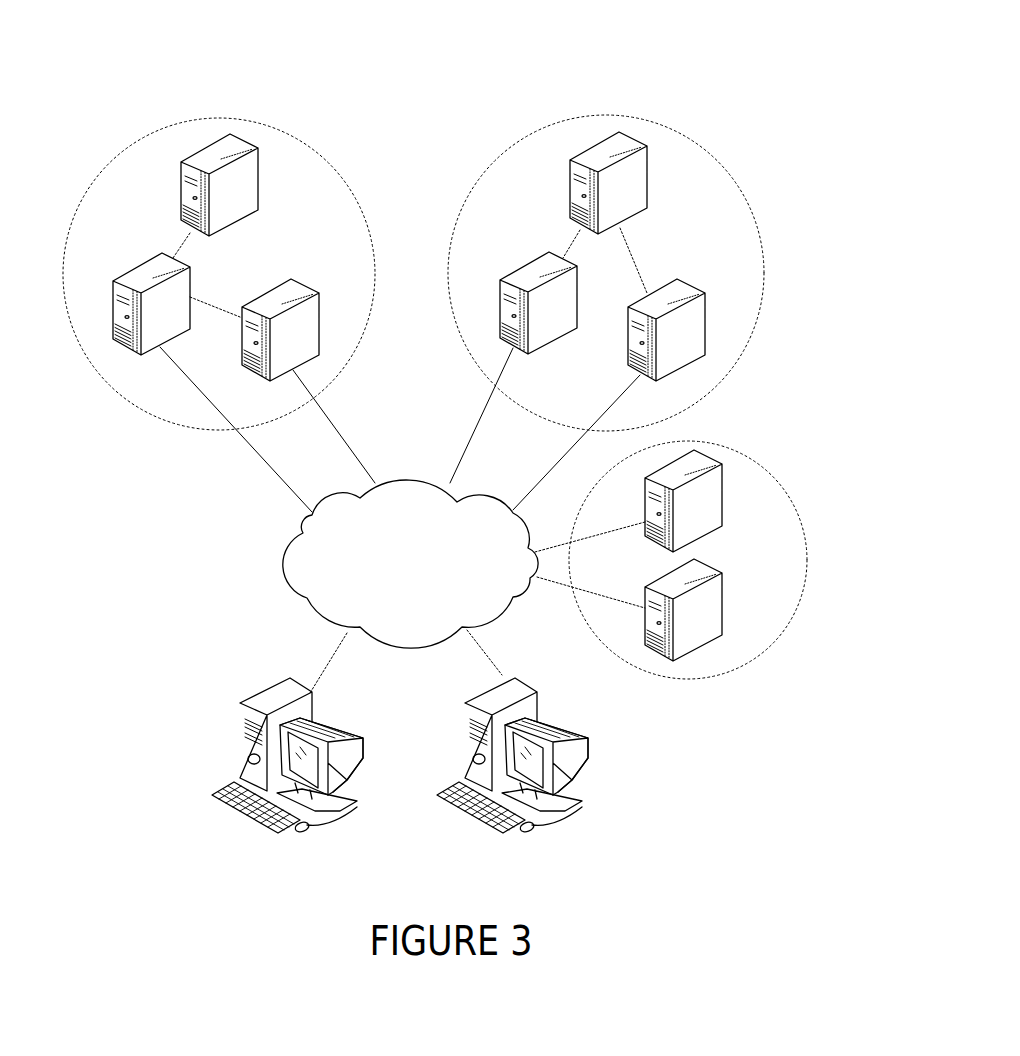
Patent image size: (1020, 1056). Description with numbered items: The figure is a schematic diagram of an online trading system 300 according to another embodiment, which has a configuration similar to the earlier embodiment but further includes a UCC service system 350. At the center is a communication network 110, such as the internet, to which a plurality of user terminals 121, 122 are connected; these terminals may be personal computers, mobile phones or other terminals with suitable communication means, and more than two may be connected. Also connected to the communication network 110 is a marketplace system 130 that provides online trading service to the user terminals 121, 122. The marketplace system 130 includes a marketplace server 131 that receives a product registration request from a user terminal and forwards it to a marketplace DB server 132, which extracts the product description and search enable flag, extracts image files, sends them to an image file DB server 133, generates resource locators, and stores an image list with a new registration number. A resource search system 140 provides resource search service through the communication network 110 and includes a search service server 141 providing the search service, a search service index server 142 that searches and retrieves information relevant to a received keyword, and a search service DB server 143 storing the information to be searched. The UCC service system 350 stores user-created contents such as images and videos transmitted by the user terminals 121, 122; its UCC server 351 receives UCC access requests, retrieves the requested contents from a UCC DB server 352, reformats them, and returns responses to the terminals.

The online trading system 300 is at (466, 36).
The communication network 110 is at (410, 477).
The user terminal 121 is at (265, 690).
The user terminal 122 is at (517, 680).
The marketplace system 130 is at (208, 117).
The marketplace server 131 is at (278, 286).
The marketplace database server 132 is at (142, 264).
The image file database server 133 is at (256, 193).
The resource search system 140 is at (597, 114).
The search service server 141 is at (680, 281).
The search service index server 142 is at (646, 193).
The search service database server 143 is at (526, 265).
The UCC service system 350 is at (808, 556).
The UCC server 351 is at (712, 641).
The UCC database server 352 is at (722, 492).